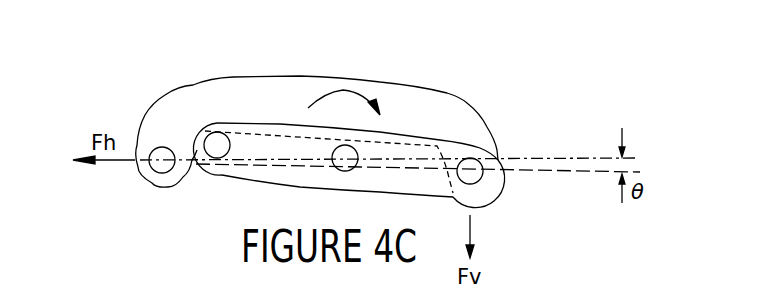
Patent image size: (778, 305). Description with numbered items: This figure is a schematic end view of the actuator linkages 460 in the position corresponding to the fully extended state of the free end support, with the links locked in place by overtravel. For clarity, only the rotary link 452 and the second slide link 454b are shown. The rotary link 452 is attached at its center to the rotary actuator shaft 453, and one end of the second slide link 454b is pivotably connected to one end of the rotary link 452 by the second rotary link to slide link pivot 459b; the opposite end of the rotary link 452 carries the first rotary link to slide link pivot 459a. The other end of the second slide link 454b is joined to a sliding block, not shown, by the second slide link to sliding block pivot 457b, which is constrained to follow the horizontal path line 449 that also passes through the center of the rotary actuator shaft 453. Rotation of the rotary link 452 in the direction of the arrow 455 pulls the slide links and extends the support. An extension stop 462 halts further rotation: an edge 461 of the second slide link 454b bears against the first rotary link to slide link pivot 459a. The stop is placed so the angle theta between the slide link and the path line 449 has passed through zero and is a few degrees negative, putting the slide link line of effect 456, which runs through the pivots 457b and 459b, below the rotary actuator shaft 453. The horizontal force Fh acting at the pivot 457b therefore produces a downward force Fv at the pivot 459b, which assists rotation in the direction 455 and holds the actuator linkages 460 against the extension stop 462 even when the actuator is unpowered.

The actuator linkages 460 is at (487, 45).
The extension stop 462 is at (213, 130).
The edge 461 is at (250, 130).
The rotary actuator shaft 453 is at (332, 152).
The arrow 455 is at (347, 88).
The second slide link 454b is at (450, 107).
The path line 449 is at (593, 155).
The second slide link to sliding block pivot 457b is at (157, 173).
The first rotary link to slide link pivot 459a is at (222, 157).
The rotary link 452 is at (298, 179).
The second rotary link to slide link pivot 459b is at (475, 186).
The slide link line of effect 456 is at (596, 175).